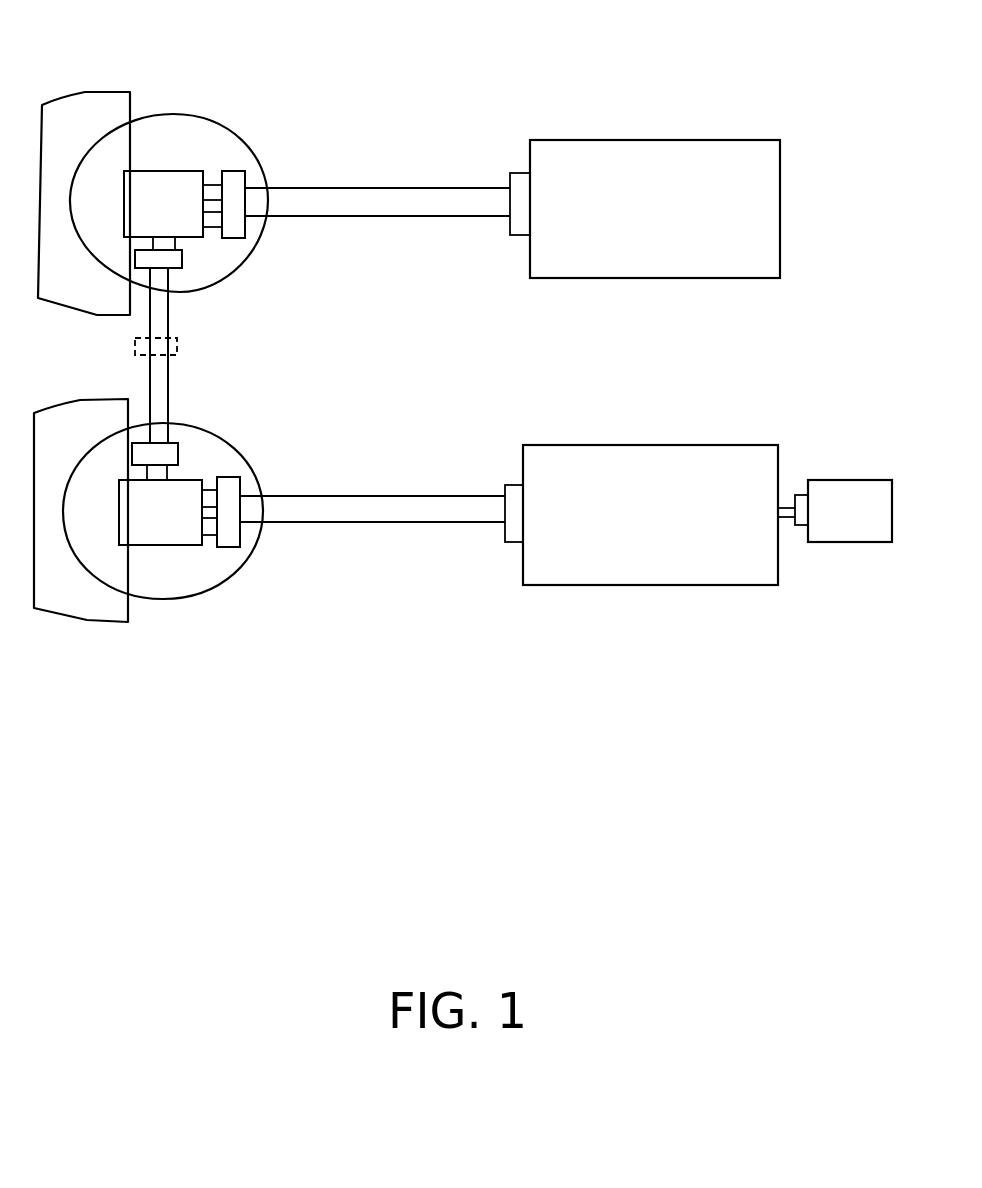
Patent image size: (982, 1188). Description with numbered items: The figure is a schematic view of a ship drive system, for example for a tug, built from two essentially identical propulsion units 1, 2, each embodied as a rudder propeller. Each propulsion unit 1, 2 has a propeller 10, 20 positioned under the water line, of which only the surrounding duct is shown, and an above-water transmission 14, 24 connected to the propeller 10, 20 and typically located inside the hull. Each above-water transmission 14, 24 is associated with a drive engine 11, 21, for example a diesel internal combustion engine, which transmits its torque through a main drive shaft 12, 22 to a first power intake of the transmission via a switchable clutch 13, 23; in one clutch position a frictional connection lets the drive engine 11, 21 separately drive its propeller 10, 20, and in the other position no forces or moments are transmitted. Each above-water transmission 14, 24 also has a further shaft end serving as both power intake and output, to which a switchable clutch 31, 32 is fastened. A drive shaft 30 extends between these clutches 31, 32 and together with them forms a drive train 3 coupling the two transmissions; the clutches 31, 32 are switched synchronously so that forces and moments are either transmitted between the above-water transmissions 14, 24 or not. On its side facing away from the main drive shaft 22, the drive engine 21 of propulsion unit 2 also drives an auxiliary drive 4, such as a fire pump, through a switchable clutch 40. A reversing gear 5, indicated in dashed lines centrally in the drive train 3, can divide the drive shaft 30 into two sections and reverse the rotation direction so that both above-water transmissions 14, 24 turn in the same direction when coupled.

The propulsion unit 1 is at (561, 103).
The propeller 10 is at (103, 90).
The drive engine 11 is at (688, 139).
The main drive shaft 12 is at (368, 188).
The switchable clutch 13 is at (236, 183).
The above-water transmission 14 is at (200, 115).
The propulsion unit 2 is at (584, 617).
The propeller 20 is at (98, 625).
The drive engine 21 is at (675, 587).
The main drive shaft 22 is at (340, 492).
The switchable clutch 23 is at (227, 493).
The above-water transmission 24 is at (210, 593).
The drive train 3 is at (180, 360).
The drive shaft 30 is at (168, 380).
The switchable clutch 31 is at (171, 265).
The switchable clutch 32 is at (177, 445).
The auxiliary drive 4 is at (828, 480).
The switchable clutch 40 is at (800, 525).
The reversing gear 5 is at (133, 350).